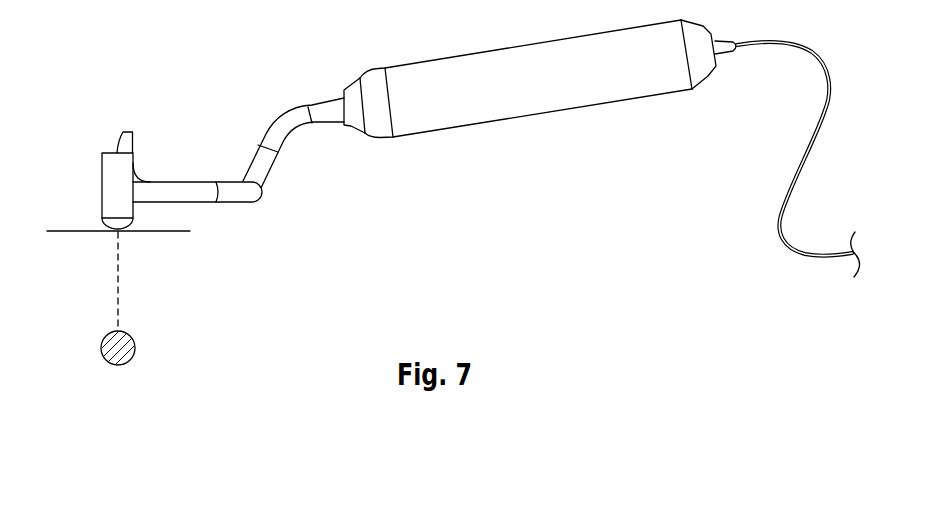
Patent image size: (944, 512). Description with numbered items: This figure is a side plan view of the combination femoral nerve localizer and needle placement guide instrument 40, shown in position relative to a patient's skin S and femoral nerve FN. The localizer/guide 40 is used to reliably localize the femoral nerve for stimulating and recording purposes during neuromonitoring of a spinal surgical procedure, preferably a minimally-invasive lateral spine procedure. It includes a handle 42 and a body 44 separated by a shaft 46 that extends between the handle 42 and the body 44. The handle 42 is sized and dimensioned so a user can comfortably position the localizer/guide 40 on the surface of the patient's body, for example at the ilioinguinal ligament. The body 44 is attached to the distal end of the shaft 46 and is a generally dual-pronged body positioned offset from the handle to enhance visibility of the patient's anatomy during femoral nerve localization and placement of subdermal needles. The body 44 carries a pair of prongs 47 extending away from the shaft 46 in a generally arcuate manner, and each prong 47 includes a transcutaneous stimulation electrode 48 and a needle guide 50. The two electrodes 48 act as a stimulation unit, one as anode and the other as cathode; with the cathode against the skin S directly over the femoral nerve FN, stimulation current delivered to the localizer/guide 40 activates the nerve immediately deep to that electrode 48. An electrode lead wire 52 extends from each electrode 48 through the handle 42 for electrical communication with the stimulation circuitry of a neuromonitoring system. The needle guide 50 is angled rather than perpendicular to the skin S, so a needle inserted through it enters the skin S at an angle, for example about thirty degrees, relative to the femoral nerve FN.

The combination femoral nerve localizer and needle placement guide instrument 40 is at (258, 84).
The handle 42 is at (523, 65).
The body 44 is at (78, 201).
The shaft 46 is at (263, 158).
The prongs 47 is at (193, 192).
The transcutaneous stimulation electrode 48 is at (121, 204).
The needle guide 50 is at (121, 148).
The electrode lead wire 52 is at (789, 196).
The skin S is at (77, 232).
The femoral nerve FN is at (117, 365).